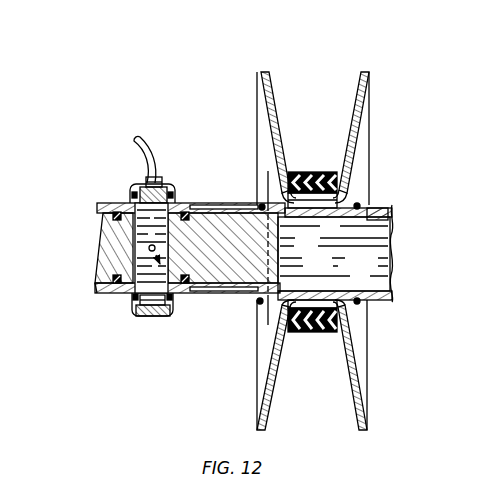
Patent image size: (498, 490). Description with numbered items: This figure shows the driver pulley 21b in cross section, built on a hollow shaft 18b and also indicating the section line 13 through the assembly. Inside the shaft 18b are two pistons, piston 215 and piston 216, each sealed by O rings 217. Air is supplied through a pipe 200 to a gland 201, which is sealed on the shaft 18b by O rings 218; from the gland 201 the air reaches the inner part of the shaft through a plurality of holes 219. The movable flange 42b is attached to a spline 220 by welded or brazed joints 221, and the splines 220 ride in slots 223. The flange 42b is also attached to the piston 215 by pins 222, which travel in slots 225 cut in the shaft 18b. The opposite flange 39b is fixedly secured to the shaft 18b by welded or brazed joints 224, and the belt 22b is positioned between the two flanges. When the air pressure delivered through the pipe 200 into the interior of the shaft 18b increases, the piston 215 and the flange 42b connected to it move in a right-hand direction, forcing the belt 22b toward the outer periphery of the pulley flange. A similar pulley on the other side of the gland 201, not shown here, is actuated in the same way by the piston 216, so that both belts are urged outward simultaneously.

The pipe 200 is at (108, 108).
The gland 201 is at (145, 185).
The O rings 218 is at (170, 192).
The O rings 217 is at (114, 216).
The holes 219 is at (120, 256).
The piston 216 is at (97, 282).
The spline 220 is at (210, 203).
The slots 223 is at (195, 206).
The welded or brazed joints 221 is at (262, 205).
The pins 222 is at (336, 212).
The slots 225 is at (326, 211).
The piston 215 is at (277, 248).
The welded or brazed joints 224 is at (358, 203).
The shaft 18b is at (384, 207).
The section line 13- 13 is at (268, 171).
The driver pulley 21b is at (316, 71).
The belt 22b is at (303, 170).
The flange 42b is at (268, 123).
The flange 39b is at (342, 186).